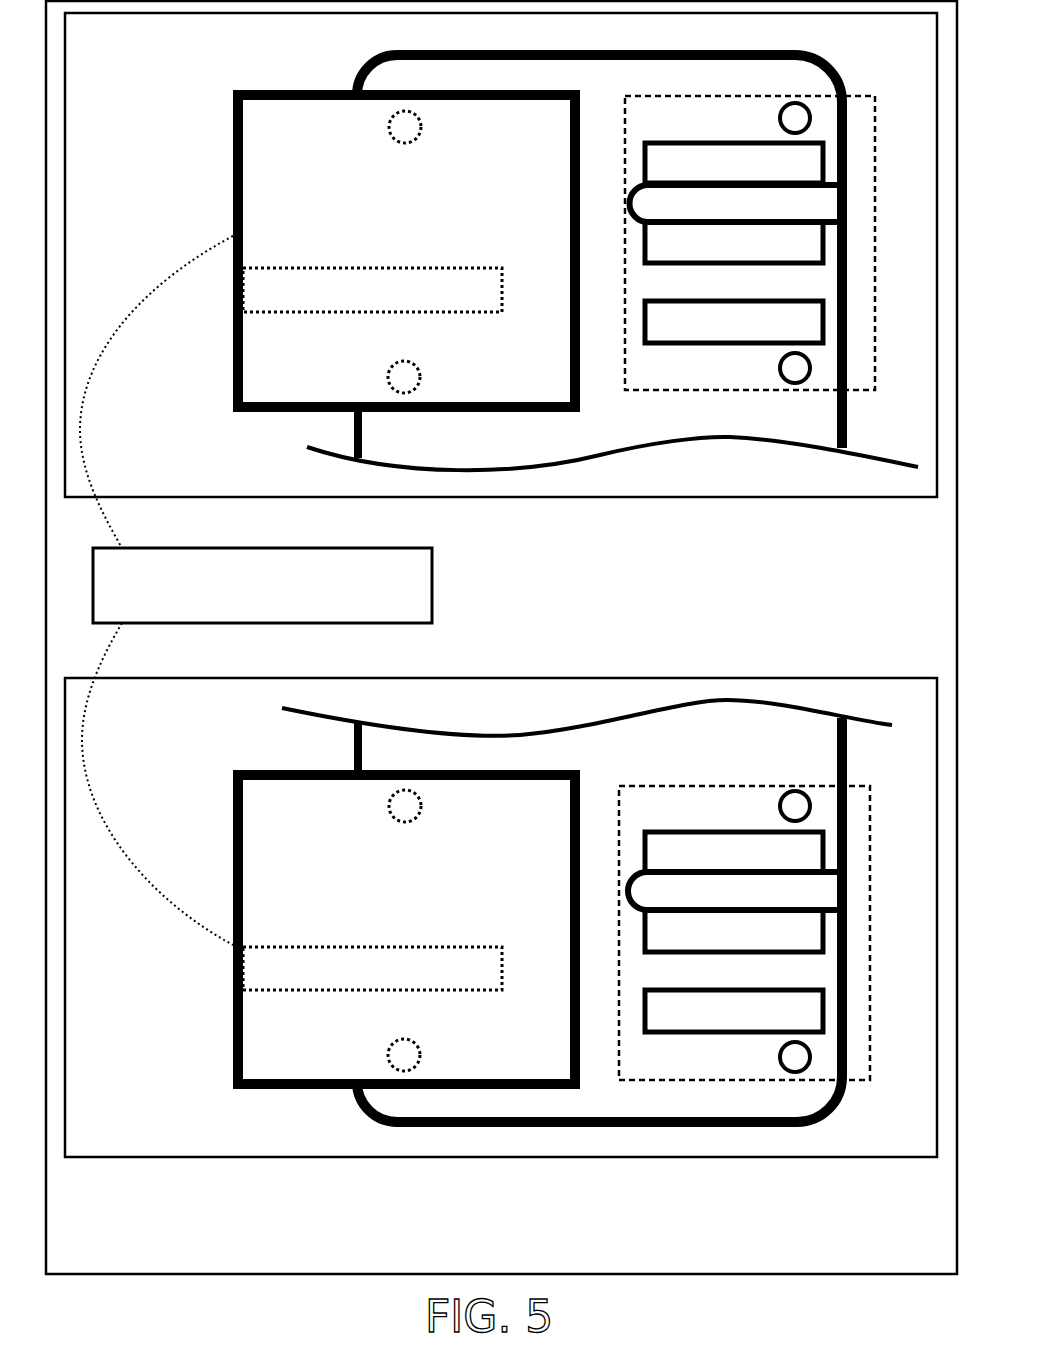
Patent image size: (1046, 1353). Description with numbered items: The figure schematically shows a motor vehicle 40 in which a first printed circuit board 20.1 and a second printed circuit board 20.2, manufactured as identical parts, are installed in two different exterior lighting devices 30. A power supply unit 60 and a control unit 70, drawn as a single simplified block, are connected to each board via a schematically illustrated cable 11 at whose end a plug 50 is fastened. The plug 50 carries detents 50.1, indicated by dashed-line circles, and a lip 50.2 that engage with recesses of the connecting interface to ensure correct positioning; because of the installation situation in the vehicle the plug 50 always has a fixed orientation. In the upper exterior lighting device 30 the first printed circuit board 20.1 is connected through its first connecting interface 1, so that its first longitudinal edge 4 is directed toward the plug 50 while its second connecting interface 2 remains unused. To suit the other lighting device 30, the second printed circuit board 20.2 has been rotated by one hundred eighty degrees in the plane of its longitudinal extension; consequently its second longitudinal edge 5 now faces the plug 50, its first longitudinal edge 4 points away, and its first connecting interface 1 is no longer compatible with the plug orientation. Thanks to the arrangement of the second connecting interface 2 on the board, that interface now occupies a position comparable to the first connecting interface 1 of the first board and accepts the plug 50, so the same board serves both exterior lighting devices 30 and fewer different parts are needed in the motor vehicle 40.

The first connecting interface 1 is at (877, 120).
The second connecting interface 2 is at (873, 1044).
The first longitudinal edge 4 is at (847, 423).
The second longitudinal edge 5 is at (353, 420).
The cable 11 is at (83, 407).
The first printed circuit board 20.1 is at (348, 1128).
The second printed circuit board 20.2 is at (357, 53).
The exterior lighting device 30 is at (715, 498).
The motor vehicle 40 is at (325, 1272).
The plug 50 is at (233, 186).
The detent 50.1 is at (405, 125).
The lip 50.2 is at (395, 285).
The power supply unit 60 is at (262, 585).
The control unit 70 is at (262, 585).